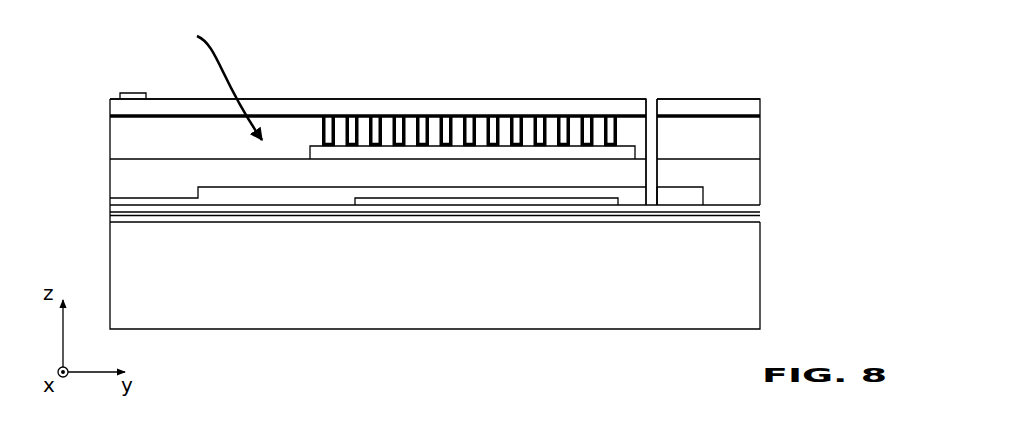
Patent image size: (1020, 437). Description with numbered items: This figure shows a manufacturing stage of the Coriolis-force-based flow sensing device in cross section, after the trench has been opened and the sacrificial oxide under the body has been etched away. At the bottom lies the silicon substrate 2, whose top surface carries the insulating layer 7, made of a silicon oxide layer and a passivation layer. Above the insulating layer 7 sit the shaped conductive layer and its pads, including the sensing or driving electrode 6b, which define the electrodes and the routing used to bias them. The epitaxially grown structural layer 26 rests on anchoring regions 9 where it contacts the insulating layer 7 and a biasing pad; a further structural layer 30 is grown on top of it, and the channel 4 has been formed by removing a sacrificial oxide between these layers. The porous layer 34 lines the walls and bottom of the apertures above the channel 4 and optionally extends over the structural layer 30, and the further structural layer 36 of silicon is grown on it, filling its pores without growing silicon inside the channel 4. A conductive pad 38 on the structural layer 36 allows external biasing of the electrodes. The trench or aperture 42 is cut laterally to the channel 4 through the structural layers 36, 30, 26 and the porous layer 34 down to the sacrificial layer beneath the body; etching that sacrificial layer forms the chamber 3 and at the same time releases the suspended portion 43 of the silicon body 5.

The silicon substrate 2 is at (745, 267).
The chamber 3 is at (688, 196).
The channel 4 is at (617, 154).
The silicon body 5 is at (508, 96).
The buried layer 6b is at (485, 205).
The insulating layer 7 is at (766, 208).
The anchoring regions 9 is at (174, 191).
The structural layer 26 is at (123, 168).
The further structural layer 30 is at (752, 131).
The porous layer 34 is at (572, 110).
The further structural layer 36 is at (320, 107).
The conductive pad 38 is at (140, 93).
The trench or aperture 42 is at (653, 98).
The suspended portion 43 is at (212, 82).